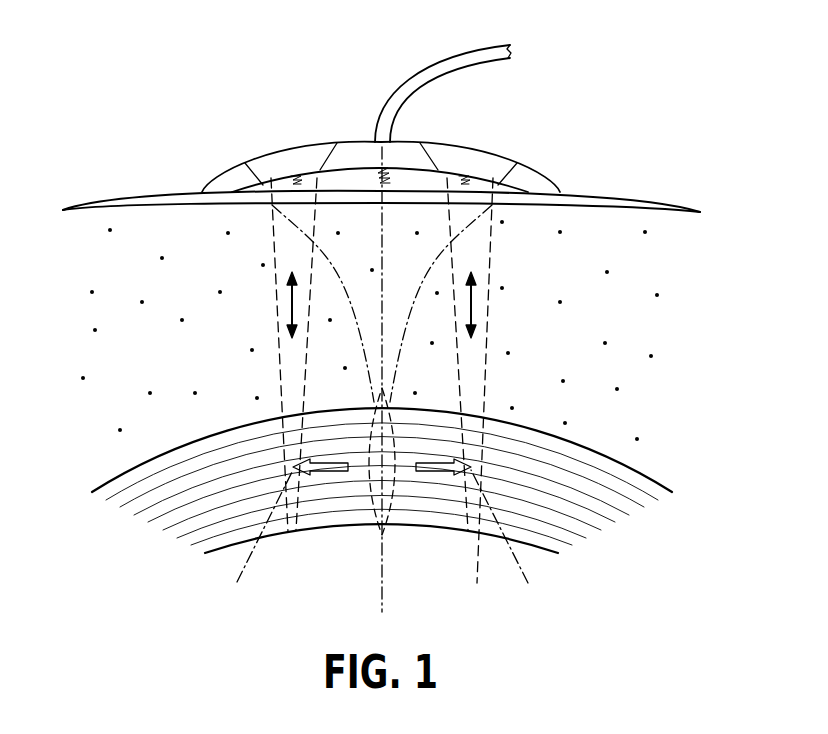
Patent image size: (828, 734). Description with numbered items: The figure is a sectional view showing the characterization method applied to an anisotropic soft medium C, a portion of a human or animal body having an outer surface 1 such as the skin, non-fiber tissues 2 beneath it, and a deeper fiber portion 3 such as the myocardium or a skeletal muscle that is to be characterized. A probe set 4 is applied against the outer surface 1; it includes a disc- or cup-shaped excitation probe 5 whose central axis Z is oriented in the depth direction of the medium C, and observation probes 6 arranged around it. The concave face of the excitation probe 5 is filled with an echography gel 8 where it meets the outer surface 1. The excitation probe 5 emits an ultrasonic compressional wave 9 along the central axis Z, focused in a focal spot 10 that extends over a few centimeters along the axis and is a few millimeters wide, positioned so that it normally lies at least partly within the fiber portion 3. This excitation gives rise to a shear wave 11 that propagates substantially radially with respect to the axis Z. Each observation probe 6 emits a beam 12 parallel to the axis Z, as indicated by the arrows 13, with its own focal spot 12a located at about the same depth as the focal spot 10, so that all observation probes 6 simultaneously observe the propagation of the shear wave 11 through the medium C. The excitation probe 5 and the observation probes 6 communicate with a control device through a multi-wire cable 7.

The outer surface 1 is at (137, 200).
The non-fiber tissues 2 is at (110, 273).
The fiber portion 3 is at (652, 485).
The probe set 4 is at (388, 96).
The excitation probe 5 is at (545, 185).
The observation probes 6 is at (277, 158).
The multi-wire cable 7 is at (437, 63).
The gel 8 is at (257, 185).
The ultrasonic compressional wave 9 is at (298, 228).
The focal spot 10 is at (392, 543).
The shear wave 11 is at (325, 468).
The beam 12 is at (278, 370).
The focal spot of observation transducer 12a is at (382, 541).
The arrows 13 is at (292, 307).
The anisotropic soft medium C is at (664, 176).
The central axis Z is at (377, 602).